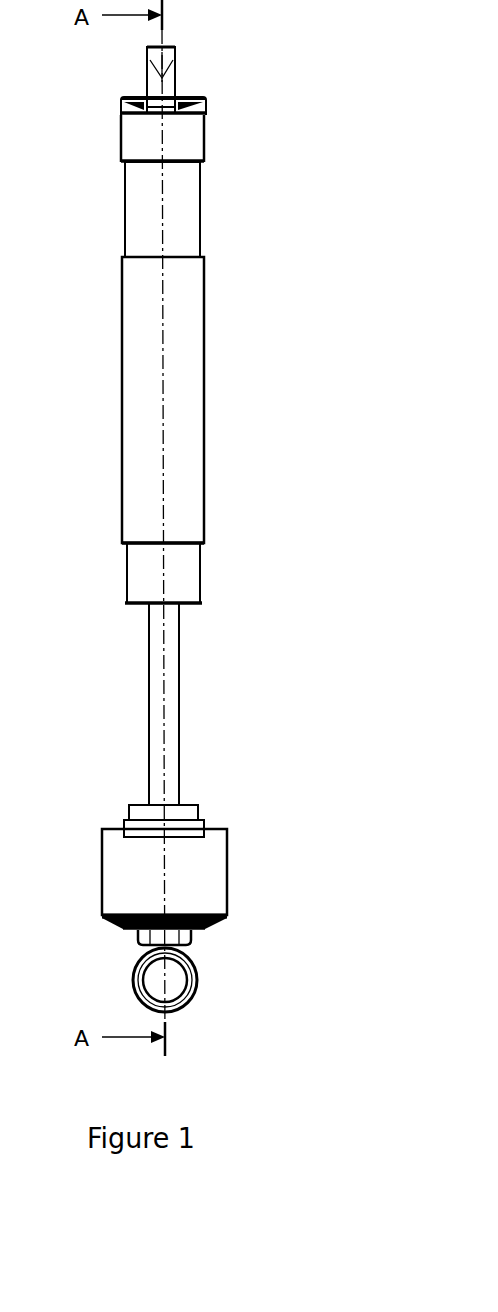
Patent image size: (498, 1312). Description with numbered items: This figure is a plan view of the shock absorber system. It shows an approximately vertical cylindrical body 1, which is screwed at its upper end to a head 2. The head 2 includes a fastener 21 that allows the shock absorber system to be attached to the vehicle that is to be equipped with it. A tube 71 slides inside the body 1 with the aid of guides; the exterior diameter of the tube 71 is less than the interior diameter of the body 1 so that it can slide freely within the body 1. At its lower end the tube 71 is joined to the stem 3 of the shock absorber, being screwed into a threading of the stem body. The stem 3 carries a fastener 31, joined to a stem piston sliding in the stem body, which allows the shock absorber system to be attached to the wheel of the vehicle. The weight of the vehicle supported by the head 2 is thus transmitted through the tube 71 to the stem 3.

The cylindrical body 1 is at (180, 393).
The head 2 is at (137, 138).
The fastener 21 is at (170, 88).
The stem 3 is at (195, 873).
The fastener 31 is at (175, 980).
The tube 71 is at (180, 688).